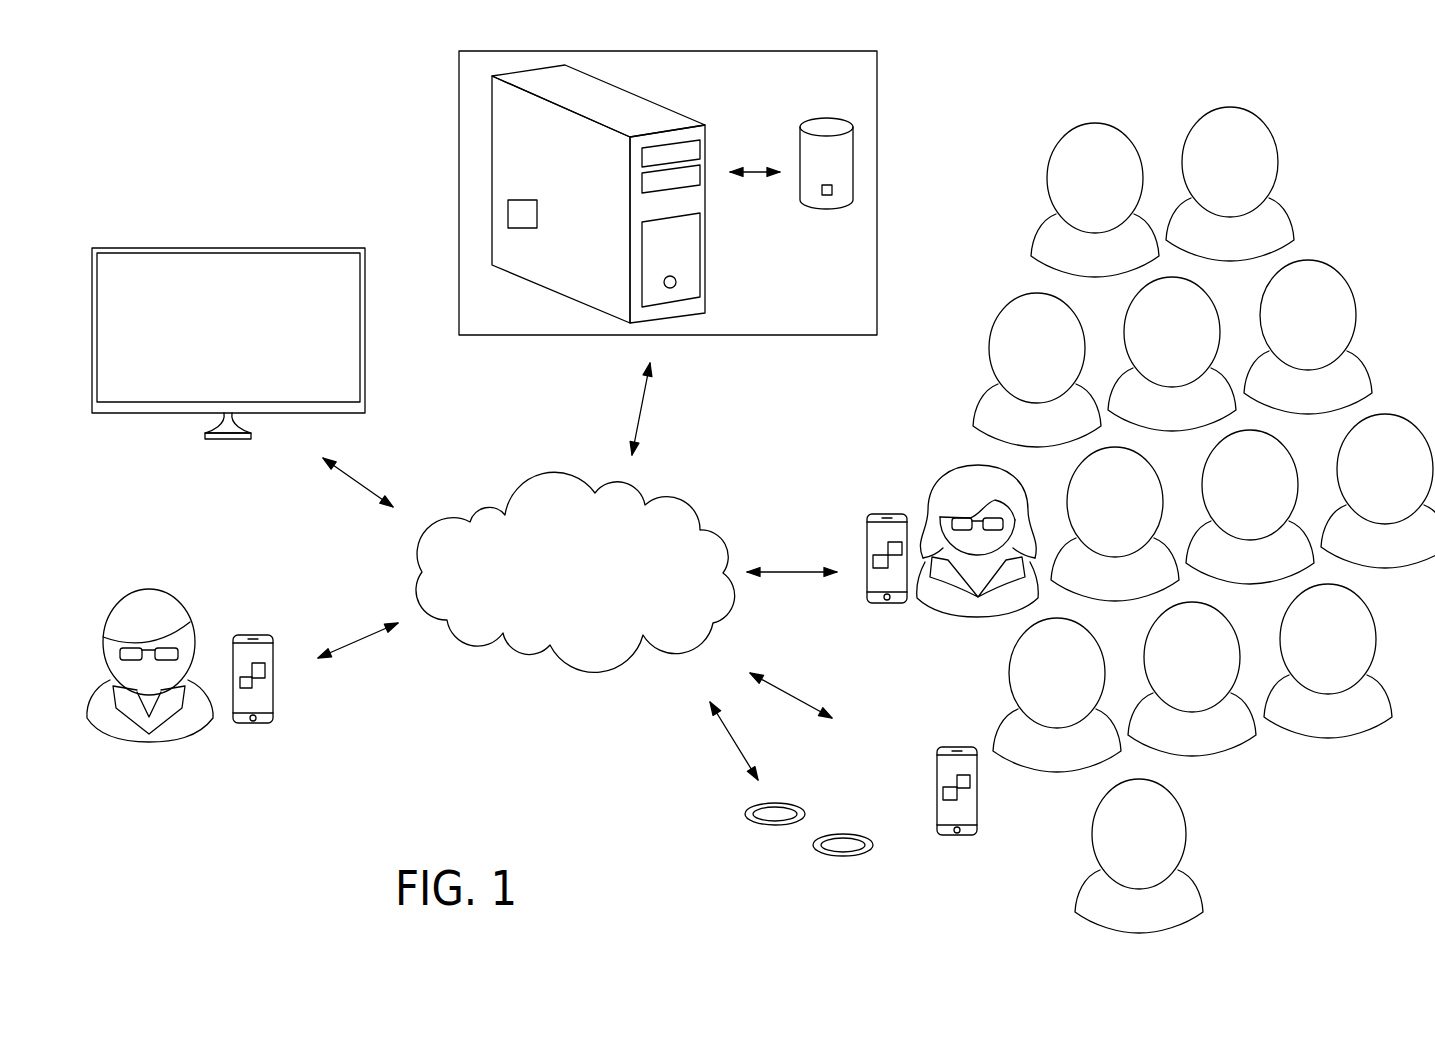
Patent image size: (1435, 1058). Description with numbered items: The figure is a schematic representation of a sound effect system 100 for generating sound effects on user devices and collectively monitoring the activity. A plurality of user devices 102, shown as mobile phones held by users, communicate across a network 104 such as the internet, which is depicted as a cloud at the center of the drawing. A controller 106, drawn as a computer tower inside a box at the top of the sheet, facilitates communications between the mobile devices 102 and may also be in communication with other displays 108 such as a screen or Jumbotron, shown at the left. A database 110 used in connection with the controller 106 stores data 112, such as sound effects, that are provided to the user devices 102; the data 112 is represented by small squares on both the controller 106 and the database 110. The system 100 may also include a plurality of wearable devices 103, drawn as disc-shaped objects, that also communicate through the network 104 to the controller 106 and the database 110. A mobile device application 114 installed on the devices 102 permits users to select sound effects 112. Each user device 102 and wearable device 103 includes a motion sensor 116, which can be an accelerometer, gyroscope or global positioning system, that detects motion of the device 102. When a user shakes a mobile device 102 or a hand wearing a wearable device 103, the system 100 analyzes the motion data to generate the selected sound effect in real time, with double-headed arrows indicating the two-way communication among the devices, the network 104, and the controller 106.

The sound effect system 100 is at (953, 53).
The user device 102 is at (275, 696).
The wearable device 103 is at (770, 827).
The network 104 is at (593, 580).
The controller 106 is at (492, 128).
The display 108 is at (240, 272).
The database 110 is at (838, 158).
The data 112 is at (518, 213).
The mobile device application 114 is at (263, 670).
The motion sensor 116 is at (246, 683).